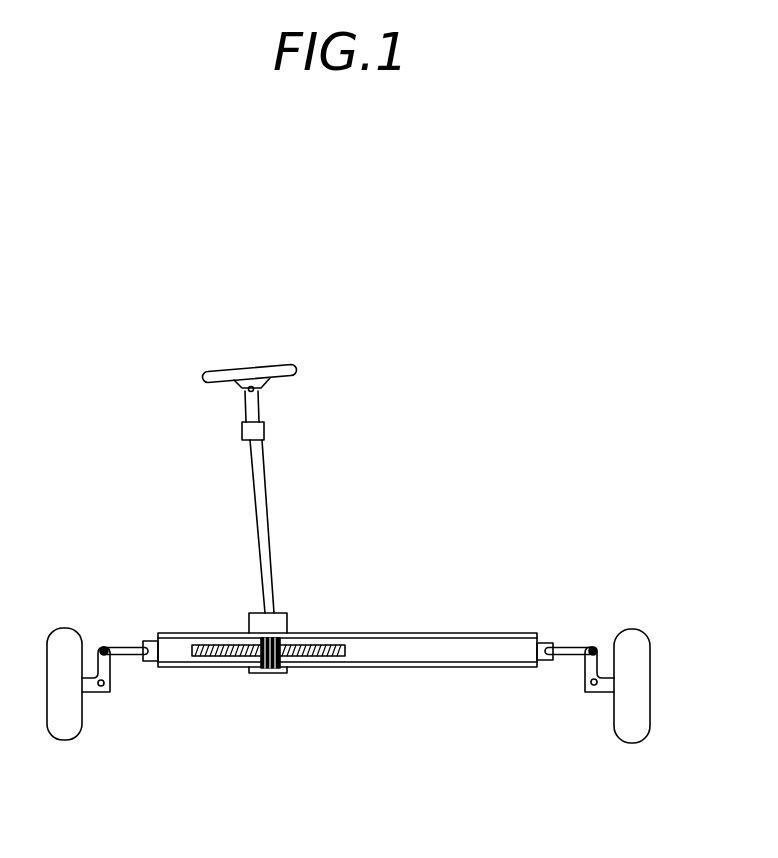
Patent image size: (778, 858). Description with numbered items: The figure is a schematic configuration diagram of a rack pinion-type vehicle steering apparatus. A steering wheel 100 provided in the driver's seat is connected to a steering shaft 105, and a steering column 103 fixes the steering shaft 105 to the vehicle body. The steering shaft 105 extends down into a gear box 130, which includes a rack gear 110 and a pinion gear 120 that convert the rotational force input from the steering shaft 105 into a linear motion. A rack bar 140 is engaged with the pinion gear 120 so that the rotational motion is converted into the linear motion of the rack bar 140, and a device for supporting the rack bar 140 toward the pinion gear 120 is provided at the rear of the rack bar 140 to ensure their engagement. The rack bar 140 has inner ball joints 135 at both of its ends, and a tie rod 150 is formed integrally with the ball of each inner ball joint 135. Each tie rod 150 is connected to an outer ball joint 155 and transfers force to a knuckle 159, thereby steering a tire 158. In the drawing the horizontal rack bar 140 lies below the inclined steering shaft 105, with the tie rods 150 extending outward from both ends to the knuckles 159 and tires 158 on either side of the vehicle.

The steering wheel 100 is at (288, 365).
The steering column 103 is at (264, 432).
The steering shaft 105 is at (263, 500).
The rack gear 110 is at (345, 658).
The pinion gear 120 is at (262, 673).
The gear box 130 is at (287, 621).
The inner ball joint 135 is at (148, 641).
The rack bar 140 is at (463, 656).
The tie rod 150 is at (128, 647).
The outer ball joint 155 is at (103, 647).
The tire 158 is at (60, 628).
The knuckle 159 is at (108, 665).